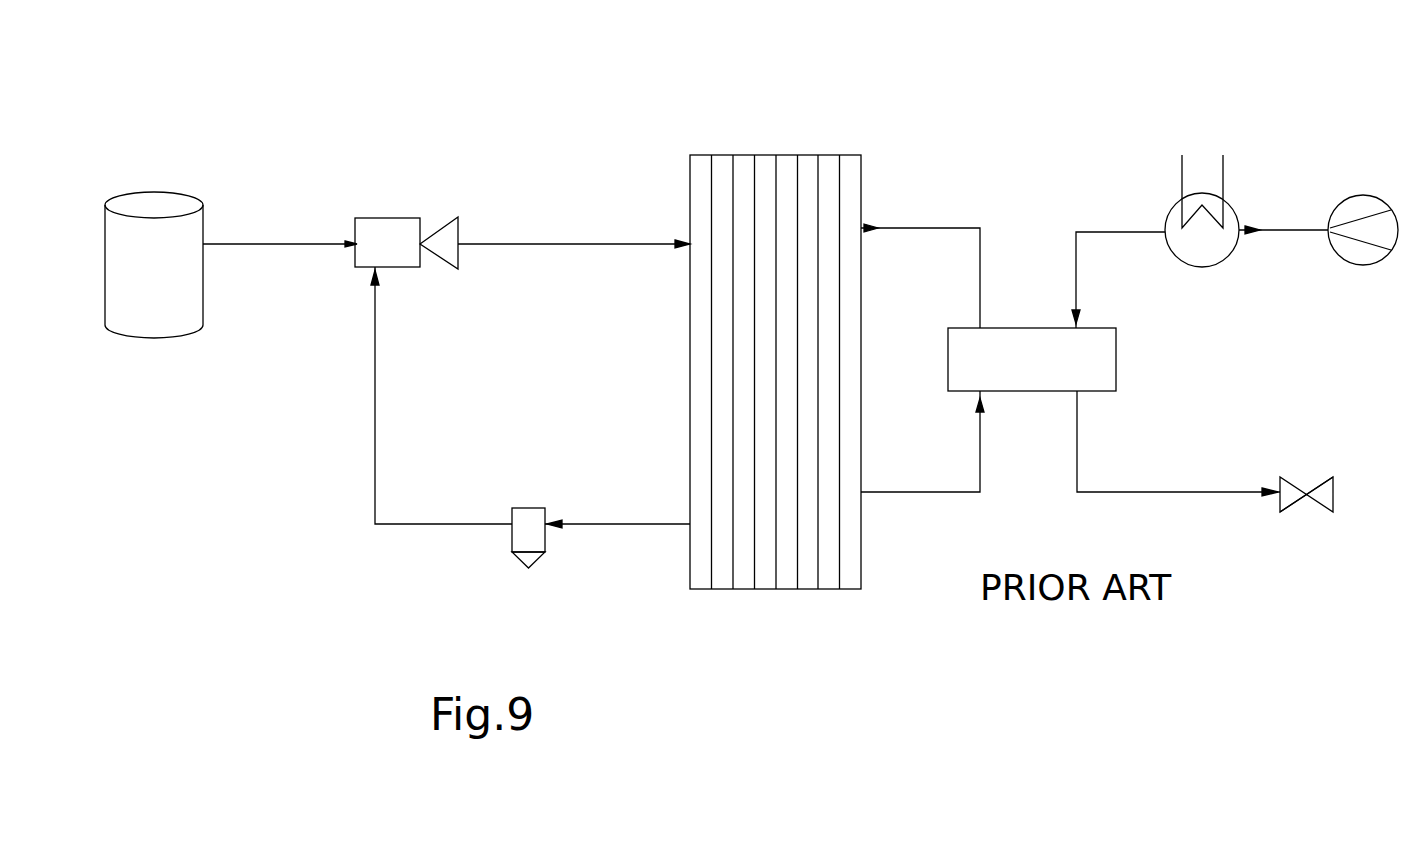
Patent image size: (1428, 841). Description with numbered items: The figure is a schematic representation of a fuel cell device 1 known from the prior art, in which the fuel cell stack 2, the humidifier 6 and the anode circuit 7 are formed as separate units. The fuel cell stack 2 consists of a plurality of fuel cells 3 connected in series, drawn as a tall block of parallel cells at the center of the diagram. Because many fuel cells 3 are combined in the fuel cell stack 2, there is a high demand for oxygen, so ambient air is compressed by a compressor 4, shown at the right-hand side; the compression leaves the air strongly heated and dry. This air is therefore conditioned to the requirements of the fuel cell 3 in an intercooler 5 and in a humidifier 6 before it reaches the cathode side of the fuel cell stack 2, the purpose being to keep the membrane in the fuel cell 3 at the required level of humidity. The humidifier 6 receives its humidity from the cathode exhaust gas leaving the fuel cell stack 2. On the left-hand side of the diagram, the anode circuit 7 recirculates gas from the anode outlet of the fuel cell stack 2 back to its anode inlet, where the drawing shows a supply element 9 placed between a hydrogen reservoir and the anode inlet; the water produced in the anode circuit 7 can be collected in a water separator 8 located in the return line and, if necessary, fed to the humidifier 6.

The fuel cell device 1 is at (993, 95).
The fuel cell stack 2 is at (878, 188).
The fuel cell 3 is at (831, 588).
The compressor 4 is at (1360, 196).
The intercooler 5 is at (1172, 190).
The humidifier 6 is at (1028, 383).
The anode circuit 7 is at (373, 432).
The water separator 8 is at (510, 535).
The pressure regulator 9 is at (389, 216).